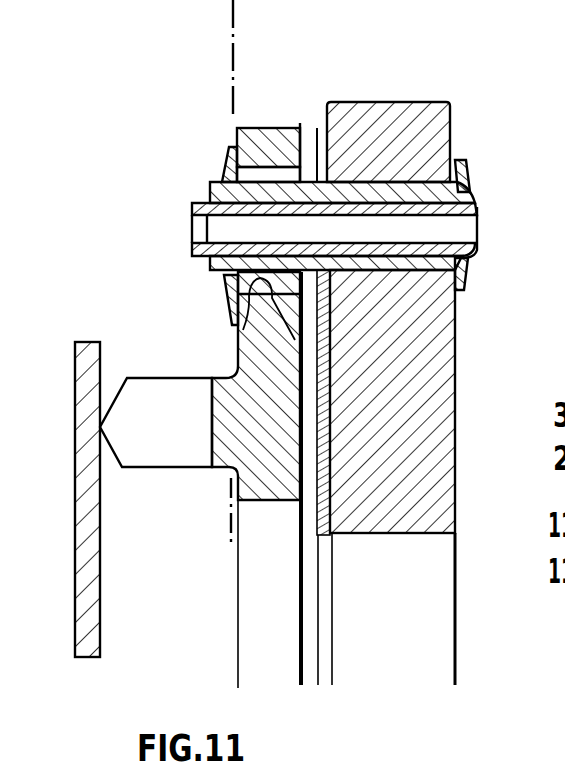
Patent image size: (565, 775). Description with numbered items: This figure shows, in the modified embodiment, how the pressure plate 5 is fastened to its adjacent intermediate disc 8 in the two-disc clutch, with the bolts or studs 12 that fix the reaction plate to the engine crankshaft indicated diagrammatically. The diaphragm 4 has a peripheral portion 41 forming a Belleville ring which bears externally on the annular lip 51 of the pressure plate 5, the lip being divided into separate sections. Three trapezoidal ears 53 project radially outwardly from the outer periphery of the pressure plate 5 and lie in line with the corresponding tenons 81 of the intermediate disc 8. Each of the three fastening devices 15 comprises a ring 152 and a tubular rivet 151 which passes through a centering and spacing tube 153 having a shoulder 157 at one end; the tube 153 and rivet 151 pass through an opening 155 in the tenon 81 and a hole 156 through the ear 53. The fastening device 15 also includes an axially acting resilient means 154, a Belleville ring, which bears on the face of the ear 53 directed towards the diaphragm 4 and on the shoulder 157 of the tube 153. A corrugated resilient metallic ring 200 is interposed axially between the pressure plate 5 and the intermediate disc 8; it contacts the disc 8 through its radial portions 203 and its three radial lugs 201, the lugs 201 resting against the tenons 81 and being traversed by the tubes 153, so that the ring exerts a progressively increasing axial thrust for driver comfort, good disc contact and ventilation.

The diaphragm 4 is at (66, 487).
The peripheral portion 41 is at (75, 412).
The annular lip 51 is at (150, 428).
The pressure plate 5 is at (259, 506).
The intermediate disc 8 is at (384, 537).
The radial portions 203 is at (322, 511).
The bolts or studs 12 is at (233, 13).
The ears 53 is at (281, 135).
The fastening devices 15 is at (223, 151).
The corrugated resilient metallic ring 200 is at (307, 108).
The radial lugs 201 is at (317, 132).
The tenons 81 is at (433, 100).
The opening 155 is at (350, 192).
The shoulder 157 is at (212, 181).
The centering and spacing tube 153 is at (402, 262).
The ring 152 is at (470, 170).
The tubular rivet 151 is at (470, 259).
The axially acting resilient means 154 is at (223, 302).
The hole 156 is at (243, 330).